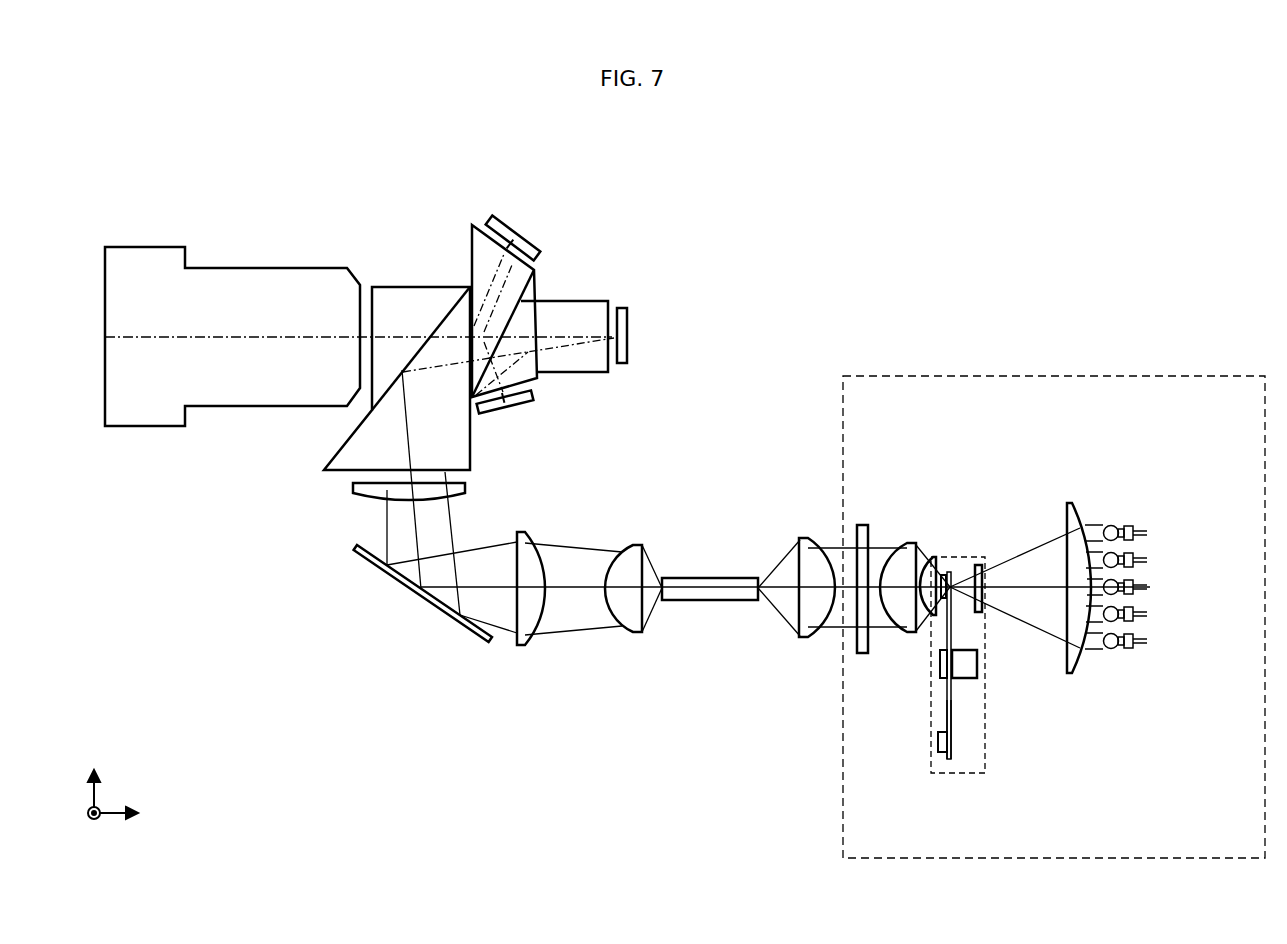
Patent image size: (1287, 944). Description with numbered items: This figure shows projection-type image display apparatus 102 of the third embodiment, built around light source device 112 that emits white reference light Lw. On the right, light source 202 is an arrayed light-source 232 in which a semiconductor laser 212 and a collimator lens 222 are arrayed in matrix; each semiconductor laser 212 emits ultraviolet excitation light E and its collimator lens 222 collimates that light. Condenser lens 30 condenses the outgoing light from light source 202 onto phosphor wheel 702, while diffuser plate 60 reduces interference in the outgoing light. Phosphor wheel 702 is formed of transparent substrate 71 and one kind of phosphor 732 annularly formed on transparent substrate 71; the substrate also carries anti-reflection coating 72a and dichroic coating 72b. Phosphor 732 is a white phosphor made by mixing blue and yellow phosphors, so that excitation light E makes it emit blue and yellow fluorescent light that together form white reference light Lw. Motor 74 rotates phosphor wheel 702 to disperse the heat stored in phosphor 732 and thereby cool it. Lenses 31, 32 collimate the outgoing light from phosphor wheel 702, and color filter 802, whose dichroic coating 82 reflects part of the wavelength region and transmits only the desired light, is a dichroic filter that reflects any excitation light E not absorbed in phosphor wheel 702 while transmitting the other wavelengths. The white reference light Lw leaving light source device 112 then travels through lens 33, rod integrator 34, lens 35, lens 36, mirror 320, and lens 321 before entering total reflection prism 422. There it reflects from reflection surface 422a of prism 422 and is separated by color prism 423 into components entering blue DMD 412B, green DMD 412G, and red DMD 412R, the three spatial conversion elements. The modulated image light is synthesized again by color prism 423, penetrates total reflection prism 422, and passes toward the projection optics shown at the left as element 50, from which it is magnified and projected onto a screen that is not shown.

The projection lens unit 50 is at (152, 246).
The projection-type image display apparatus 102 is at (1092, 201).
The light source device 112 is at (928, 376).
The total reflection prism 422 is at (473, 205).
The reflection surface 422a is at (348, 440).
The color prism 423 is at (658, 205).
The blue DMD 412B is at (533, 243).
The green DMD 412G is at (627, 308).
The red DMD 412R is at (523, 408).
The lens 321 is at (362, 499).
The mirror 320 is at (448, 620).
The lens 36 is at (517, 643).
The lens 35 is at (633, 630).
The rod integrator 34 is at (708, 602).
The lens 33 is at (797, 547).
The color filter 802 is at (857, 527).
The dichroic coating 82 is at (867, 527).
The lens 32 is at (907, 545).
The lens 31 is at (934, 557).
The diffuser plate 60 is at (977, 612).
The phosphor wheel 702 is at (985, 762).
The transparent substrate 71 is at (950, 759).
The anti-reflection coating 72a is at (951, 737).
The dichroic coating 72b is at (946, 757).
The motor 74 is at (970, 678).
The phosphor 732 is at (940, 740).
The condenser lens 30 is at (1077, 668).
The light source 202 is at (1193, 478).
The collimator lens 222 is at (1112, 523).
The semiconductor laser 212 is at (1128, 527).
The arrayed light-source 232 is at (1160, 515).